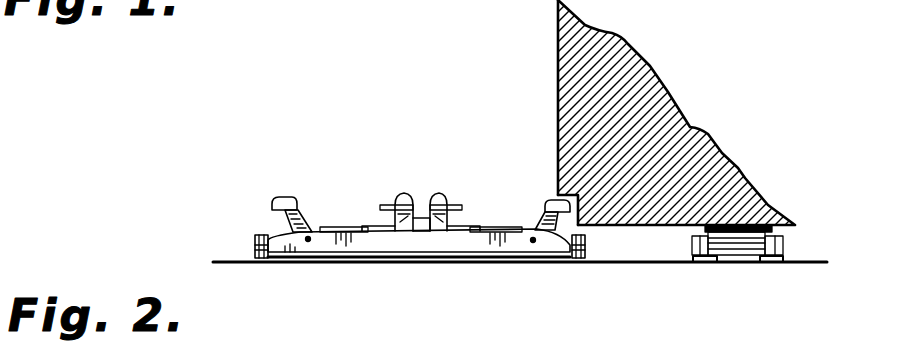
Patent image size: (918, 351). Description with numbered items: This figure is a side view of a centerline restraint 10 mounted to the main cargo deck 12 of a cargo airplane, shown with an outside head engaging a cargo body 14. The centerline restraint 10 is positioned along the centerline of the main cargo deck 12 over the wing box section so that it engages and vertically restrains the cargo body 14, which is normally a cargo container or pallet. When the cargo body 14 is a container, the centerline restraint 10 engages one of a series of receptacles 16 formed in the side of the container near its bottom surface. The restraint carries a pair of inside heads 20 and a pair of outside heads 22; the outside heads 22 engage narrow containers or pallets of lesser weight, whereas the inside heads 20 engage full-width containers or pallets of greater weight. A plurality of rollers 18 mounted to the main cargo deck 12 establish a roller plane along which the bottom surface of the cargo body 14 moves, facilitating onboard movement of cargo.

The centerline restraint 10 is at (402, 146).
The main cargo deck 12 is at (806, 262).
The cargo body 14 is at (626, 150).
The receptacle 16 is at (577, 196).
The rollers 18 is at (745, 255).
The inside heads 20 is at (438, 189).
The outside heads 22 is at (303, 208).